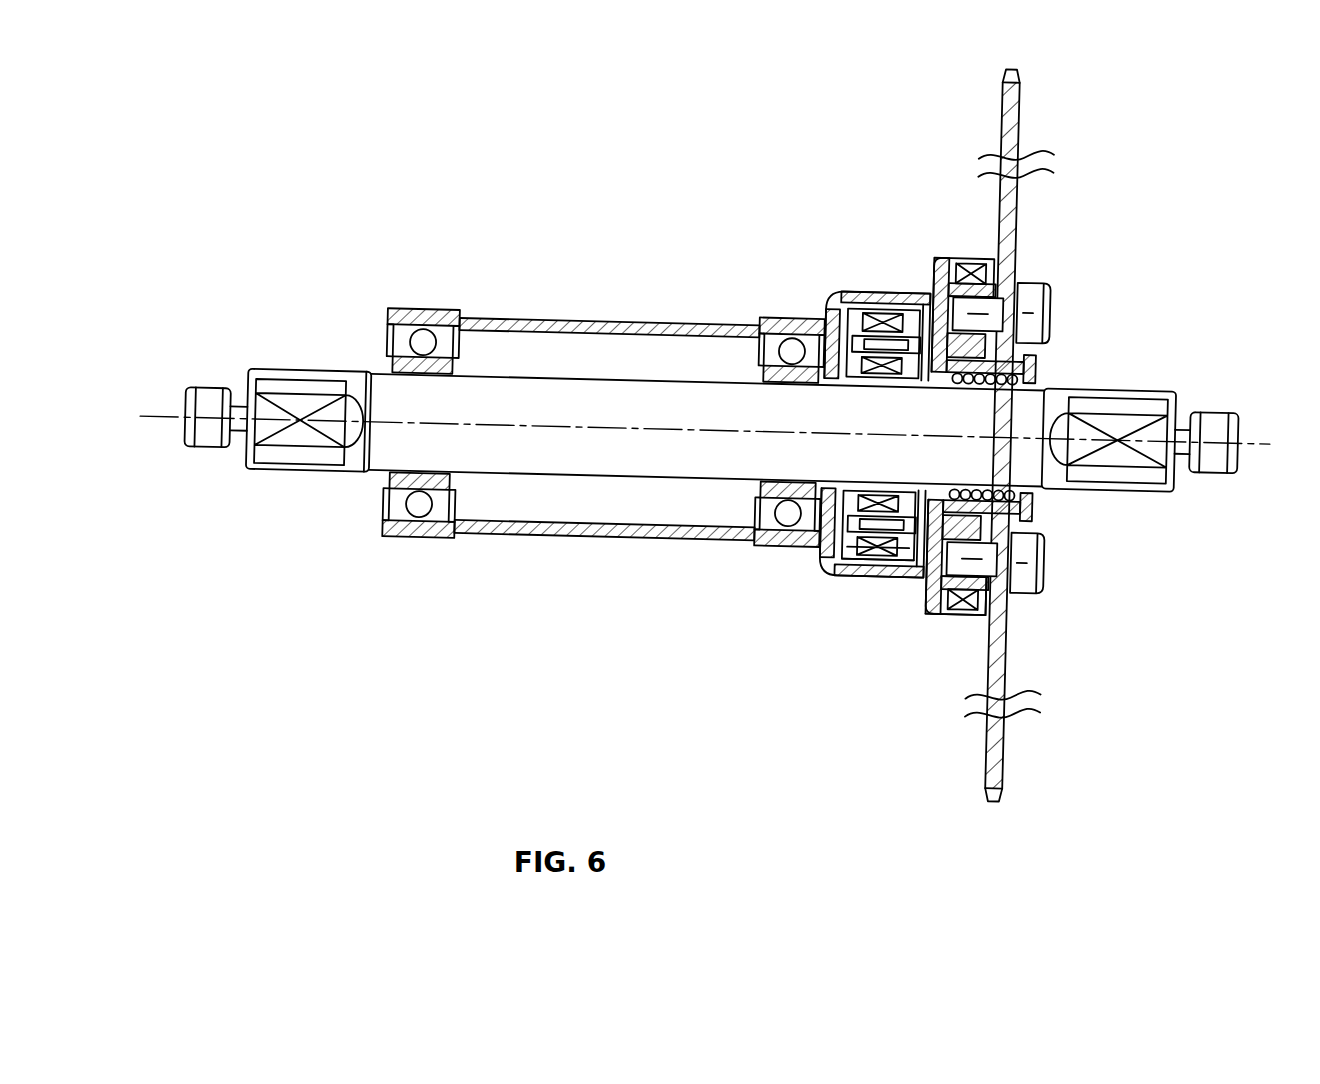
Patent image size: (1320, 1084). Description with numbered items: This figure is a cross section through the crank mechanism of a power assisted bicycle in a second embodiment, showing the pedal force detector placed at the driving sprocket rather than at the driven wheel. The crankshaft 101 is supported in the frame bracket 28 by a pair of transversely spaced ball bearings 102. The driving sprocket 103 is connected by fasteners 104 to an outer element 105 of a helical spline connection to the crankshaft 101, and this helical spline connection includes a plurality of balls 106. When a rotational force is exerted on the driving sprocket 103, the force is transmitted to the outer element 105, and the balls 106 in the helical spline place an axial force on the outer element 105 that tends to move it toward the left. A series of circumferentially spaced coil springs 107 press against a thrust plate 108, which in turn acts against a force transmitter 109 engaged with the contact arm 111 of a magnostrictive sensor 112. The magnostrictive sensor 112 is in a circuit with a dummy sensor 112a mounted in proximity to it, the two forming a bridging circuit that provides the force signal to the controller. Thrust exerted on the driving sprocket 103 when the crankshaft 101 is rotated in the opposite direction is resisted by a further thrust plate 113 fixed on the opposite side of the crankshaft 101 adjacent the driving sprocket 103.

The frame bracket 28 is at (595, 535).
The crankshaft 101 is at (1130, 394).
The ball bearings 102 is at (400, 533).
The driving sprocket 103 is at (1003, 760).
The fasteners 104 is at (1040, 302).
The outer element 105 is at (990, 285).
The balls 106 is at (996, 394).
The coil springs 107 is at (1030, 523).
The thrust plate 108 is at (930, 620).
The force transmitter 109 is at (885, 595).
The contact arm 111 is at (913, 527).
The magnostrictive sensor 112 is at (870, 585).
The dummy sensor 112a is at (892, 292).
The thrust plate 113 is at (1035, 528).